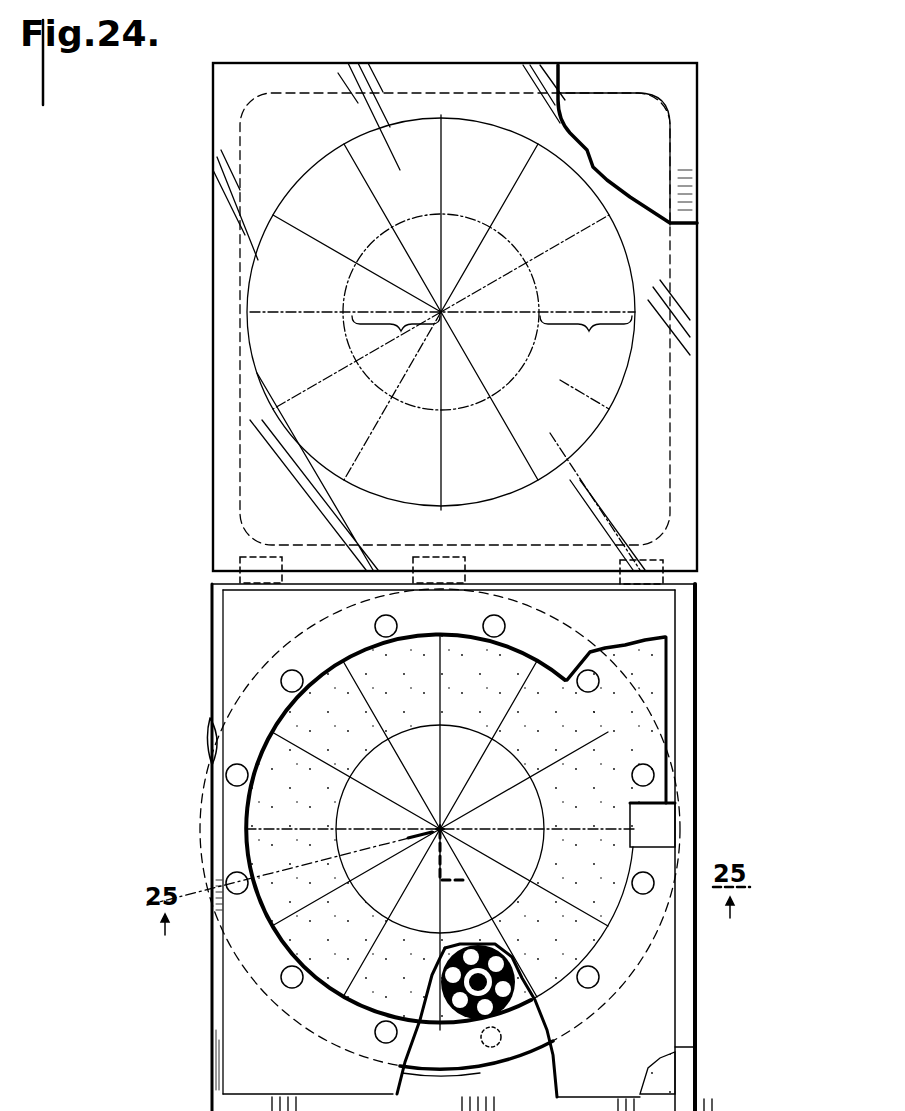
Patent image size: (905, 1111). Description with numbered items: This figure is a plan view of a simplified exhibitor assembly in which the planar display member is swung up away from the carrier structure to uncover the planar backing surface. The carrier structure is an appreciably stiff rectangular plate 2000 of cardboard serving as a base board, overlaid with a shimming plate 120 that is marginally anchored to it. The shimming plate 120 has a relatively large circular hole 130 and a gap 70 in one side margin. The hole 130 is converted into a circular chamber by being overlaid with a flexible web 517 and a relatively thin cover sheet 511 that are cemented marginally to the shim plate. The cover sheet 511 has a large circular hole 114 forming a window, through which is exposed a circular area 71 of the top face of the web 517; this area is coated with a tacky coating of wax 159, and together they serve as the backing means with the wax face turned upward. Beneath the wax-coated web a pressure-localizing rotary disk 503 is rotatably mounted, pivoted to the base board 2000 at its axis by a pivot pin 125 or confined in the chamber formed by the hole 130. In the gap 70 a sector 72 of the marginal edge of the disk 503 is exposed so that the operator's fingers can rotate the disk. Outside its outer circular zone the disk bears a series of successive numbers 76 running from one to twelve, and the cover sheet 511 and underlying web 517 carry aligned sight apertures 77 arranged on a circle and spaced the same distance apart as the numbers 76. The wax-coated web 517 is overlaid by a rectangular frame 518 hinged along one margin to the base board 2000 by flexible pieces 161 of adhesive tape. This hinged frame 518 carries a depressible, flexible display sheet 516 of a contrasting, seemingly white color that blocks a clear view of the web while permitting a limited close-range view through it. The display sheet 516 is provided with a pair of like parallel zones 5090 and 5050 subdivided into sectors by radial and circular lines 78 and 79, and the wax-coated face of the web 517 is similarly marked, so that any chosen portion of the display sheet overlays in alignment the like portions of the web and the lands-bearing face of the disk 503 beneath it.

The circular lines 79 is at (503, 128).
The radial lines 78 is at (557, 240).
The display sheet 516 is at (612, 284).
The rectangular frame 518 is at (705, 378).
The inner zone 5050 is at (398, 332).
The outer zone 5090 is at (589, 333).
The flexible pieces of adhesive tape 161 is at (240, 573).
The sight apertures 77 is at (400, 622).
The successive numbers 76 is at (243, 762).
The gap 70 is at (218, 767).
The sector of marginal edge 72 is at (210, 818).
The flexible web 517 is at (683, 667).
The tacky coating of wax 159 is at (545, 746).
The pivot pin 125 is at (448, 829).
The circular hole 114 is at (618, 858).
The exposed circular area 71 is at (603, 898).
The cover sheet 511 is at (655, 989).
The rectangular plate 2000 is at (210, 988).
The shimming plate 120 is at (232, 1108).
The rotary disk 503 is at (428, 1073).
The circular hole 130 is at (472, 1073).